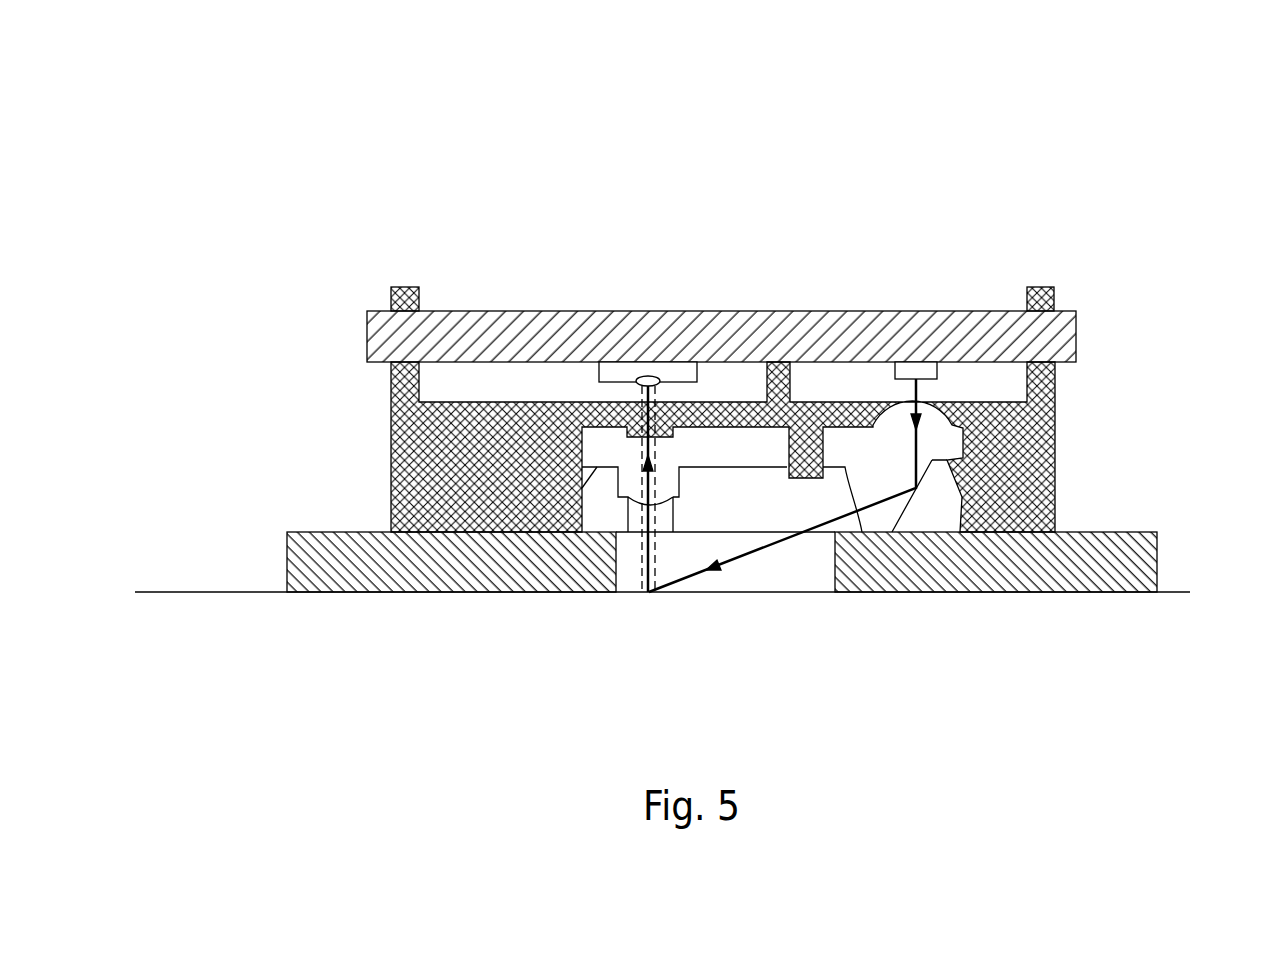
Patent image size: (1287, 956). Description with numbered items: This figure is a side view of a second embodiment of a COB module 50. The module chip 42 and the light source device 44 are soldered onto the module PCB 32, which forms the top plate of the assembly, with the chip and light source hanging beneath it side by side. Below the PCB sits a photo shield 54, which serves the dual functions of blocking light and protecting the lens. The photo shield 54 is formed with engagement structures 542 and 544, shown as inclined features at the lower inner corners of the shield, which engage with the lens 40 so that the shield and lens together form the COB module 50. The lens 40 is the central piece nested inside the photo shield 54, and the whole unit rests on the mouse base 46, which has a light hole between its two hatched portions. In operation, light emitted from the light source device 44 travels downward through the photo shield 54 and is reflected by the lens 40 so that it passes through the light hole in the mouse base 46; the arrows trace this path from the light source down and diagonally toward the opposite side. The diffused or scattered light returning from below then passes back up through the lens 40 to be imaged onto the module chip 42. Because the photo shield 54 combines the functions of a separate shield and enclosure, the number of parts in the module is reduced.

The COB module 50 is at (886, 164).
The module PCB 32 is at (735, 308).
The module chip 42 is at (627, 372).
The light source device 44 is at (915, 368).
The photo shield 54 is at (1055, 432).
The mouse base 46 is at (1158, 542).
The lens 40 is at (738, 452).
The engagement structure 542 is at (597, 467).
The engagement structure 544 is at (957, 463).